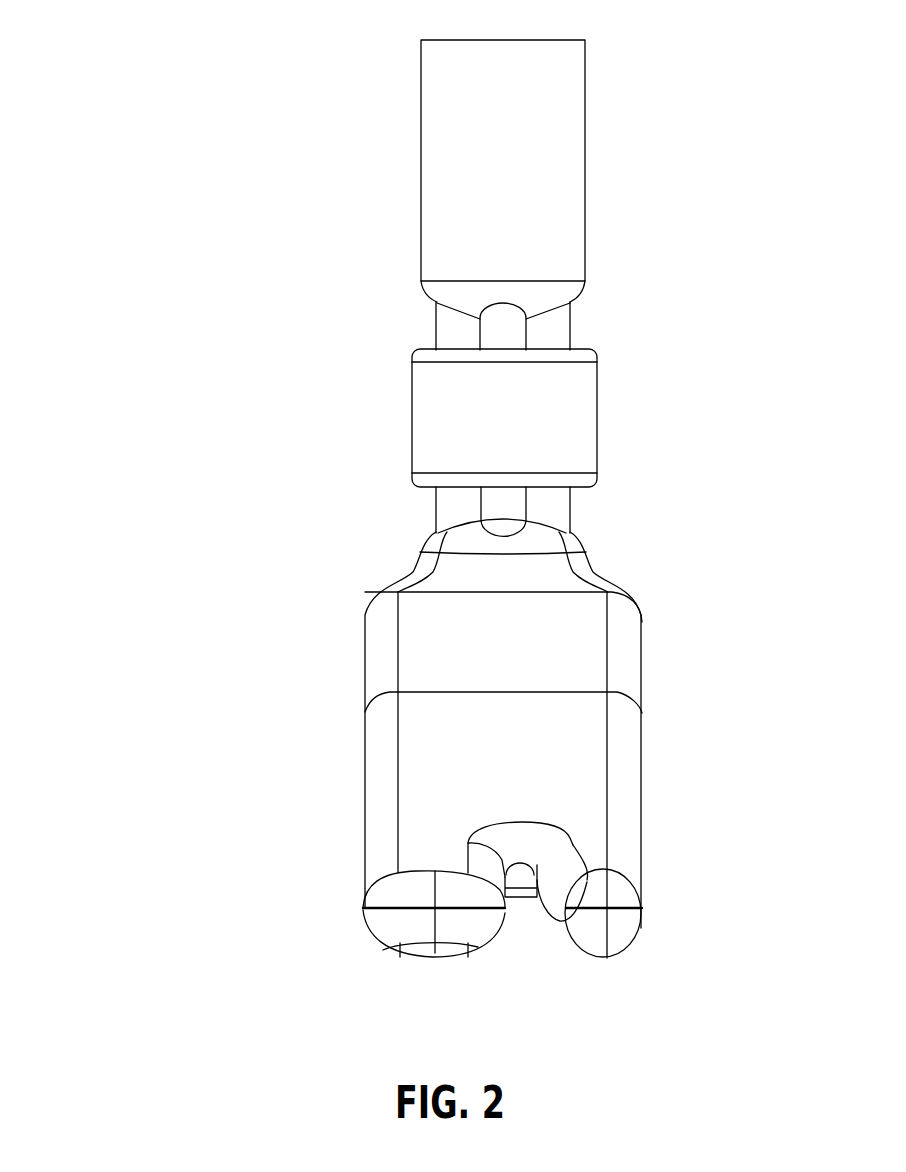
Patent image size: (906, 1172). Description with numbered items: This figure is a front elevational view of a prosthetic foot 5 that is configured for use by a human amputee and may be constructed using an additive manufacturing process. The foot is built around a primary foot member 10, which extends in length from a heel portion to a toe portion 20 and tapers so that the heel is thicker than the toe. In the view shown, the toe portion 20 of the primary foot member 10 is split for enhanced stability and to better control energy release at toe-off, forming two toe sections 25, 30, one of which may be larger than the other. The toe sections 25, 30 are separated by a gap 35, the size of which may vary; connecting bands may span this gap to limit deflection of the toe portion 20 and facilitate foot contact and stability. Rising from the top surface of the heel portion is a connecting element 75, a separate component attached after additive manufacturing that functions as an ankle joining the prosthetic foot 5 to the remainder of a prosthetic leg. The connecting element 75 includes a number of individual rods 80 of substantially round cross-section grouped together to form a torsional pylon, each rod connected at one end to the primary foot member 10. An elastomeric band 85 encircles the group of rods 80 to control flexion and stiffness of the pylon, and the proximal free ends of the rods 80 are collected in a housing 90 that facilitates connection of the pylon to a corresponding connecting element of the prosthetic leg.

The prosthetic foot 5 is at (124, 174).
The primary foot member 10 is at (473, 657).
The toe portion 20 is at (327, 879).
The toe section 25 is at (378, 932).
The toe section 30 is at (620, 925).
The gap 35 is at (523, 867).
The connecting element 75 is at (666, 134).
The rods 80 is at (563, 328).
The elastomeric band 85 is at (427, 422).
The housing 90 is at (570, 80).